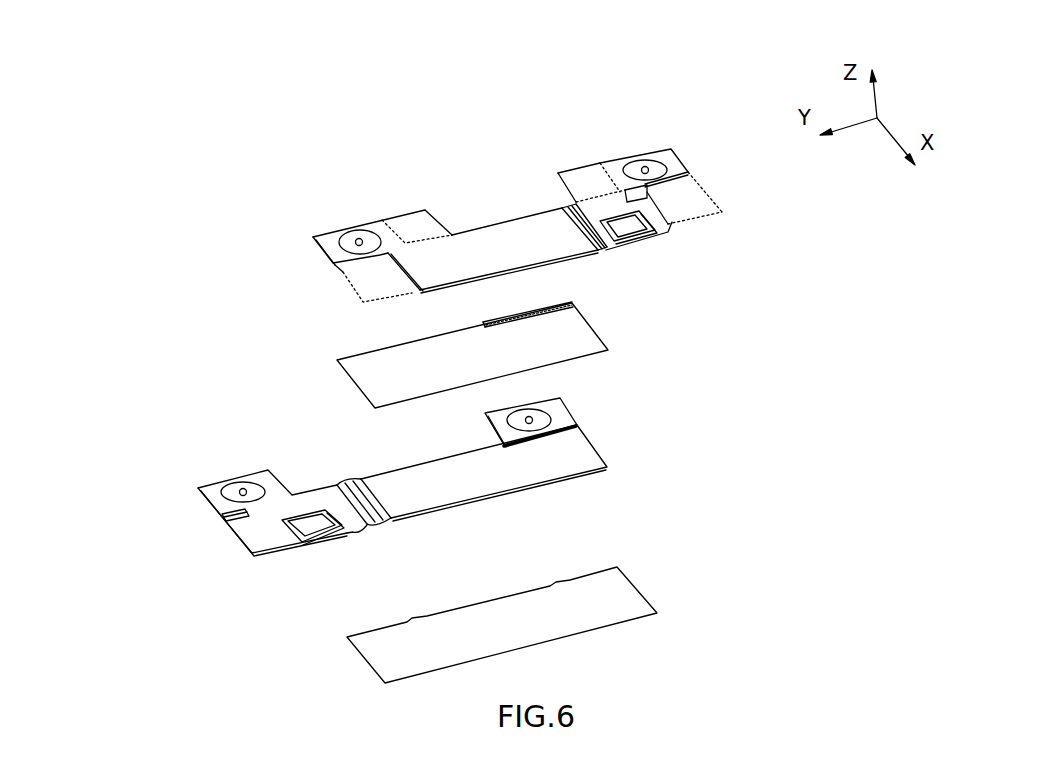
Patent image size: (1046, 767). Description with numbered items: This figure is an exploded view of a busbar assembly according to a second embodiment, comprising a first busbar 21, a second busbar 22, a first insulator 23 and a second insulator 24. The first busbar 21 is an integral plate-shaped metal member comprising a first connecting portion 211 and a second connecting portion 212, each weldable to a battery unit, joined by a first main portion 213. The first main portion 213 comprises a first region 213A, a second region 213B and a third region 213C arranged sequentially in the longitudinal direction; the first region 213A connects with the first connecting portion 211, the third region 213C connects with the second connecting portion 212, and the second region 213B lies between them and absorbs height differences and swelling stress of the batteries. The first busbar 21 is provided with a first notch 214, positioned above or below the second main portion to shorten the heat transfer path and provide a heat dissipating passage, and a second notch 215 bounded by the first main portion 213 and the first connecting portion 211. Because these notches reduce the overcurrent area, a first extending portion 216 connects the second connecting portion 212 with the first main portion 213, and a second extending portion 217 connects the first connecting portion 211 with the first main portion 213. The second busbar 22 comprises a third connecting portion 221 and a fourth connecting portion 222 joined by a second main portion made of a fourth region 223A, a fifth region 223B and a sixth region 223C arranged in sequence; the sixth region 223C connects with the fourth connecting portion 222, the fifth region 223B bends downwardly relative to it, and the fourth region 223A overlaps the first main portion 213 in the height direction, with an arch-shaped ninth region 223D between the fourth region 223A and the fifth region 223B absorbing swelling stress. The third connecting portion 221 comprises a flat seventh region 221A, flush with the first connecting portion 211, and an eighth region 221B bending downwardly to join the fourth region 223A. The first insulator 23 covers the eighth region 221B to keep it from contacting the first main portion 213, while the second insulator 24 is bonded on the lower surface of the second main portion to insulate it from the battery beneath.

The first busbar 21 is at (250, 205).
The first connecting portion 211 is at (620, 160).
The second connecting portion 212 is at (337, 237).
The first main portion 213 is at (782, 226).
The first region 213A is at (663, 222).
The second region 213B is at (598, 250).
The third region 213C is at (533, 252).
The first notch 214 is at (372, 279).
The second notch 215 is at (665, 198).
The first extending portion 216 is at (410, 228).
The second extending portion 217 is at (583, 175).
The second busbar 22 is at (140, 488).
The third connecting portion 221 is at (672, 381).
The seventh region 221A is at (560, 410).
The eighth region 221B is at (573, 425).
The fourth connecting portion 222 is at (258, 475).
The fourth region 223A is at (483, 488).
The fifth region 223B is at (367, 527).
The sixth region 223C is at (275, 537).
The ninth region 223D is at (378, 508).
The first insulator 23 is at (387, 358).
The second insulator 24 is at (628, 600).